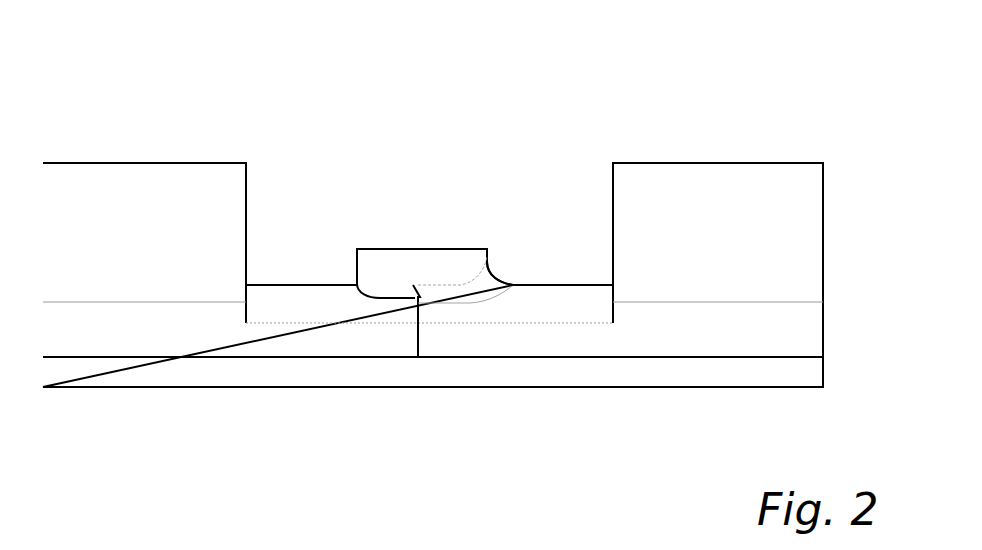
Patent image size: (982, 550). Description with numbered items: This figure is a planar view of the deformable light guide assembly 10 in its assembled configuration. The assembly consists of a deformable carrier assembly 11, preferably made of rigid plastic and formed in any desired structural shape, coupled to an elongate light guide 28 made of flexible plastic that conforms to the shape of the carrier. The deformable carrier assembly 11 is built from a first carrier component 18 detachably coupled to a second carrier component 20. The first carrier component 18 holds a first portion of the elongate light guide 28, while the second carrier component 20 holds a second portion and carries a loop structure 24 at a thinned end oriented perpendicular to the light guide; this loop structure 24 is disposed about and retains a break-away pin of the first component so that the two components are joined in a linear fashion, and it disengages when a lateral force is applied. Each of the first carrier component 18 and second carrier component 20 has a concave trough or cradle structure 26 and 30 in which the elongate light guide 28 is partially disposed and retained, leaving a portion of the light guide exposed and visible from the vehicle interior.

The deformable light guide assembly 10 is at (437, 145).
The deformable carrier assembly 11 is at (518, 248).
The first carrier component 18 is at (205, 163).
The second carrier component 20 is at (718, 162).
The loop structure 24 is at (477, 230).
The concave trough or cradle structure 26 is at (208, 324).
The elongate light guide 28 is at (730, 372).
The concave trough or cradle structure 30 is at (800, 328).